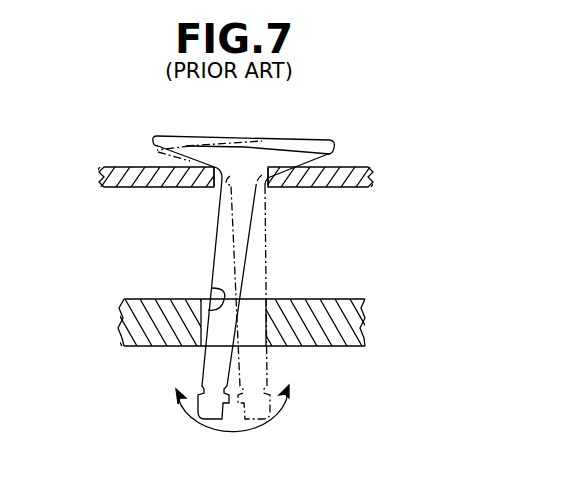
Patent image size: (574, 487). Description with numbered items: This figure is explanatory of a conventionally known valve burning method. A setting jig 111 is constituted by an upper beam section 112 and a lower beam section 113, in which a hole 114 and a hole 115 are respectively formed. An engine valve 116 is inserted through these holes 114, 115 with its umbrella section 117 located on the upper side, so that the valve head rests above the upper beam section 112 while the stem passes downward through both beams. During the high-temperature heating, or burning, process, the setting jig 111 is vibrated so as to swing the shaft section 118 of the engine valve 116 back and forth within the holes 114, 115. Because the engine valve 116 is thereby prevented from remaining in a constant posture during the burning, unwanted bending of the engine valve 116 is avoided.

The setting jig 111 is at (258, 251).
The upper beam section 112 is at (372, 168).
The lower beam section 113 is at (347, 321).
The hole 114 is at (216, 188).
The hole 115 is at (212, 288).
The engine valve 116 is at (239, 302).
The umbrella section 117 is at (172, 134).
The shaft section 118 is at (217, 235).